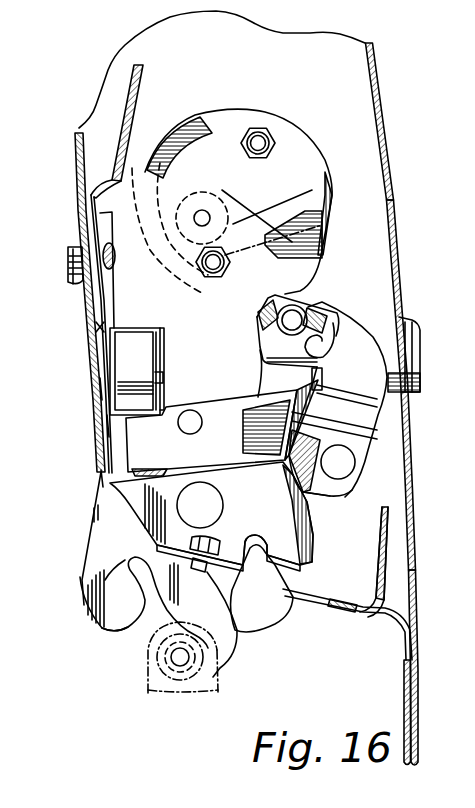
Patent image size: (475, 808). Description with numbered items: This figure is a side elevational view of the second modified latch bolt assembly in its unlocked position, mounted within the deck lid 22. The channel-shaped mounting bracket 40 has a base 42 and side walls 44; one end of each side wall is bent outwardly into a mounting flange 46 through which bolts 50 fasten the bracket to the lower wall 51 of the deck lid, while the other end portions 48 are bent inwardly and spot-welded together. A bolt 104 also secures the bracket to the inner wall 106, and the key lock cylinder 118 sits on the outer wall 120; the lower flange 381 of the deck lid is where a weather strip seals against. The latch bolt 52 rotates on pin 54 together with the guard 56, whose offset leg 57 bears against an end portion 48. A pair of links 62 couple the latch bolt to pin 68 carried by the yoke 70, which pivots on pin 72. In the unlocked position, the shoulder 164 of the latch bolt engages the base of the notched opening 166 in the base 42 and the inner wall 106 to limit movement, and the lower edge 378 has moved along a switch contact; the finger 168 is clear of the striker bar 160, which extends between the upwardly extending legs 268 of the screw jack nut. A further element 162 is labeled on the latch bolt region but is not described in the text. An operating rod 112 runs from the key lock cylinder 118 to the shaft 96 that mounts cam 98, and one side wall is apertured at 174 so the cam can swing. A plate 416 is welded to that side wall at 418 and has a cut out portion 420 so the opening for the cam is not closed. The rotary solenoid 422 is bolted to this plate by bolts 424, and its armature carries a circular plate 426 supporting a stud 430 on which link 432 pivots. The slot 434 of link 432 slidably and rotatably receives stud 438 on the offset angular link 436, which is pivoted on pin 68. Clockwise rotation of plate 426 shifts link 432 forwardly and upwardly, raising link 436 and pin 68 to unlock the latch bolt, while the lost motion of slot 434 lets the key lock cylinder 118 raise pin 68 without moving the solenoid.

The deck lid 22 is at (377, 84).
The outer wall 120 is at (389, 172).
The lower flange 381 is at (408, 683).
The inner wall 106 is at (74, 130).
The plate 416 is at (120, 195).
The circular plate 426 is at (234, 110).
The rotary solenoid 422 is at (332, 190).
The bolts 424 is at (270, 133).
The stud 430 is at (207, 214).
The link 432 is at (258, 332).
The stud 438 is at (300, 296).
The slot 434 is at (315, 309).
The pin 68 is at (347, 470).
The key lock cylinder 118 is at (366, 393).
The offset angular link 436 is at (360, 418).
The pin 72 is at (203, 426).
The aperture 174 is at (207, 400).
The operating rod 112 is at (291, 400).
The weld 418 is at (113, 262).
The cam 98 is at (127, 340).
The cut out portion 420 is at (163, 357).
The shaft 96 is at (160, 377).
The bolt 104 is at (72, 283).
The mounting bracket 40 is at (100, 327).
The base 42 is at (93, 382).
The side walls 44 is at (110, 420).
The notched opening 166 is at (100, 472).
The shoulder 164 is at (100, 492).
The bolts 50 is at (210, 537).
The pin 54 is at (207, 498).
The guard 56 is at (257, 533).
The links 62 is at (315, 498).
The yoke 70 is at (350, 497).
The mounting flange 46 is at (157, 544).
The end portions 48 is at (318, 560).
The offset leg 57 is at (273, 605).
The lower wall 51 is at (335, 612).
The latch bolt 52 is at (98, 601).
The spring hook end 162 is at (125, 562).
The lower edge 378 is at (103, 622).
The striker bar 160 is at (167, 683).
The legs 268 is at (218, 695).
The finger 168 is at (236, 648).